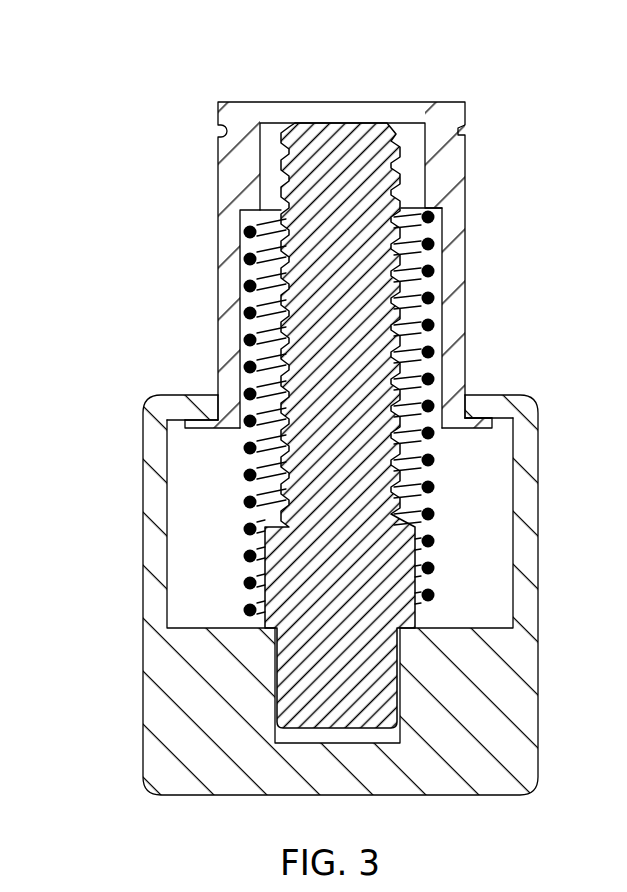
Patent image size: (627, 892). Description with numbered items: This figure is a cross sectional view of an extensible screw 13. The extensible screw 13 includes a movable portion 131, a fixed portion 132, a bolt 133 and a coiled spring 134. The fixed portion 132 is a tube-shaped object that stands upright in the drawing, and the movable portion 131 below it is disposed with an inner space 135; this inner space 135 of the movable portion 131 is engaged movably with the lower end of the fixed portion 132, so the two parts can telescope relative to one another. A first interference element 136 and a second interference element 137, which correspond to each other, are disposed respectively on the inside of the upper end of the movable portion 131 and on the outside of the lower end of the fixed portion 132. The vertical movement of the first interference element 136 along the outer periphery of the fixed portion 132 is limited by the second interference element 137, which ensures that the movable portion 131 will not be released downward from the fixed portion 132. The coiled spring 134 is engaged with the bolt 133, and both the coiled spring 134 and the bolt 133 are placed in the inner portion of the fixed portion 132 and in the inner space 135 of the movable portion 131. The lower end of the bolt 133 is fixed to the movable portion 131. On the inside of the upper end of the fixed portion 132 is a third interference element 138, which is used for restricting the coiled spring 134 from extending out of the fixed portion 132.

The extensible screw 13 is at (366, 41).
The movable portion 131 is at (503, 752).
The fixed portion 132 is at (457, 263).
The bolt 133 is at (388, 577).
The coiled spring 134 is at (446, 319).
The inner space 135 is at (197, 534).
The first interference element 136 is at (477, 413).
The second interference element 137 is at (486, 425).
The third interference element 138 is at (433, 207).